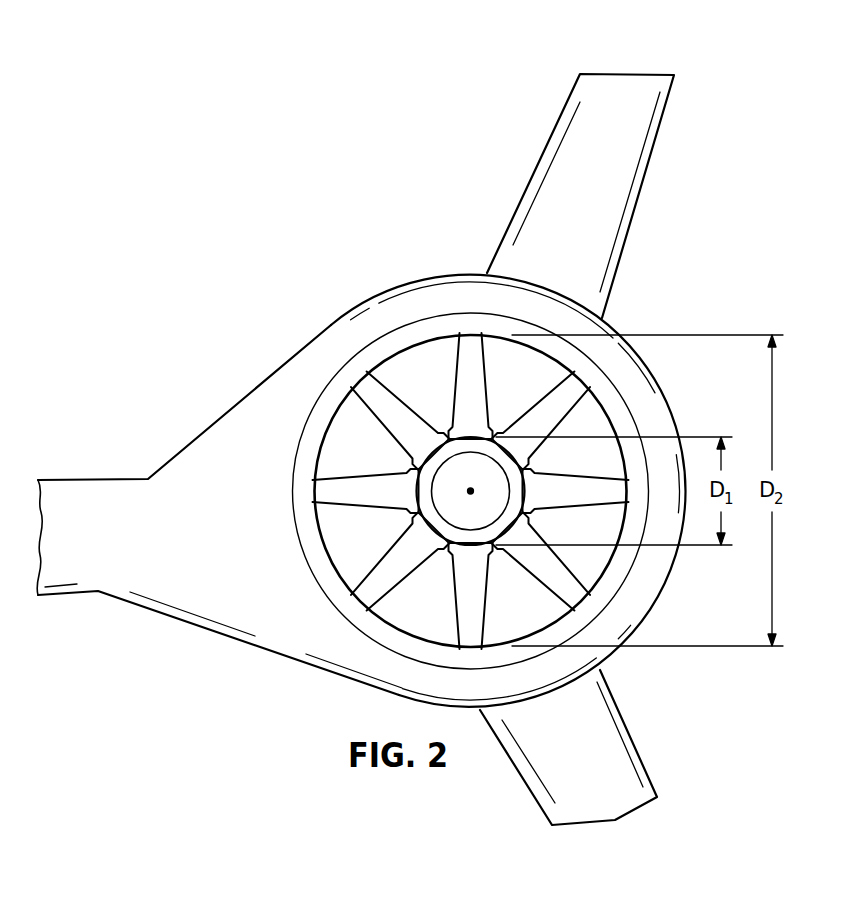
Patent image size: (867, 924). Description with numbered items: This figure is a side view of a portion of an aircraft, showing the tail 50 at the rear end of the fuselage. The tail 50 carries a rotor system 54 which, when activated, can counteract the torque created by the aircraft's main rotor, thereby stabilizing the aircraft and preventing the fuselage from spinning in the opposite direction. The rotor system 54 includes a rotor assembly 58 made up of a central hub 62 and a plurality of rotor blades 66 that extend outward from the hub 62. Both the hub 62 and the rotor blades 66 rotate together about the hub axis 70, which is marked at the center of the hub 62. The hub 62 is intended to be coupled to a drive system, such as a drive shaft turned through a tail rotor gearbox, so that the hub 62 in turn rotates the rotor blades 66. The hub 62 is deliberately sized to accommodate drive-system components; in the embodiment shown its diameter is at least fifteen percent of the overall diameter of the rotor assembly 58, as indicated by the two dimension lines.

The tail 50 is at (373, 449).
The rotor system 54 is at (642, 415).
The rotor assembly 58 is at (309, 492).
The hub 62 is at (442, 432).
The rotor blades 66 is at (385, 414).
The hub axis 70 is at (476, 491).